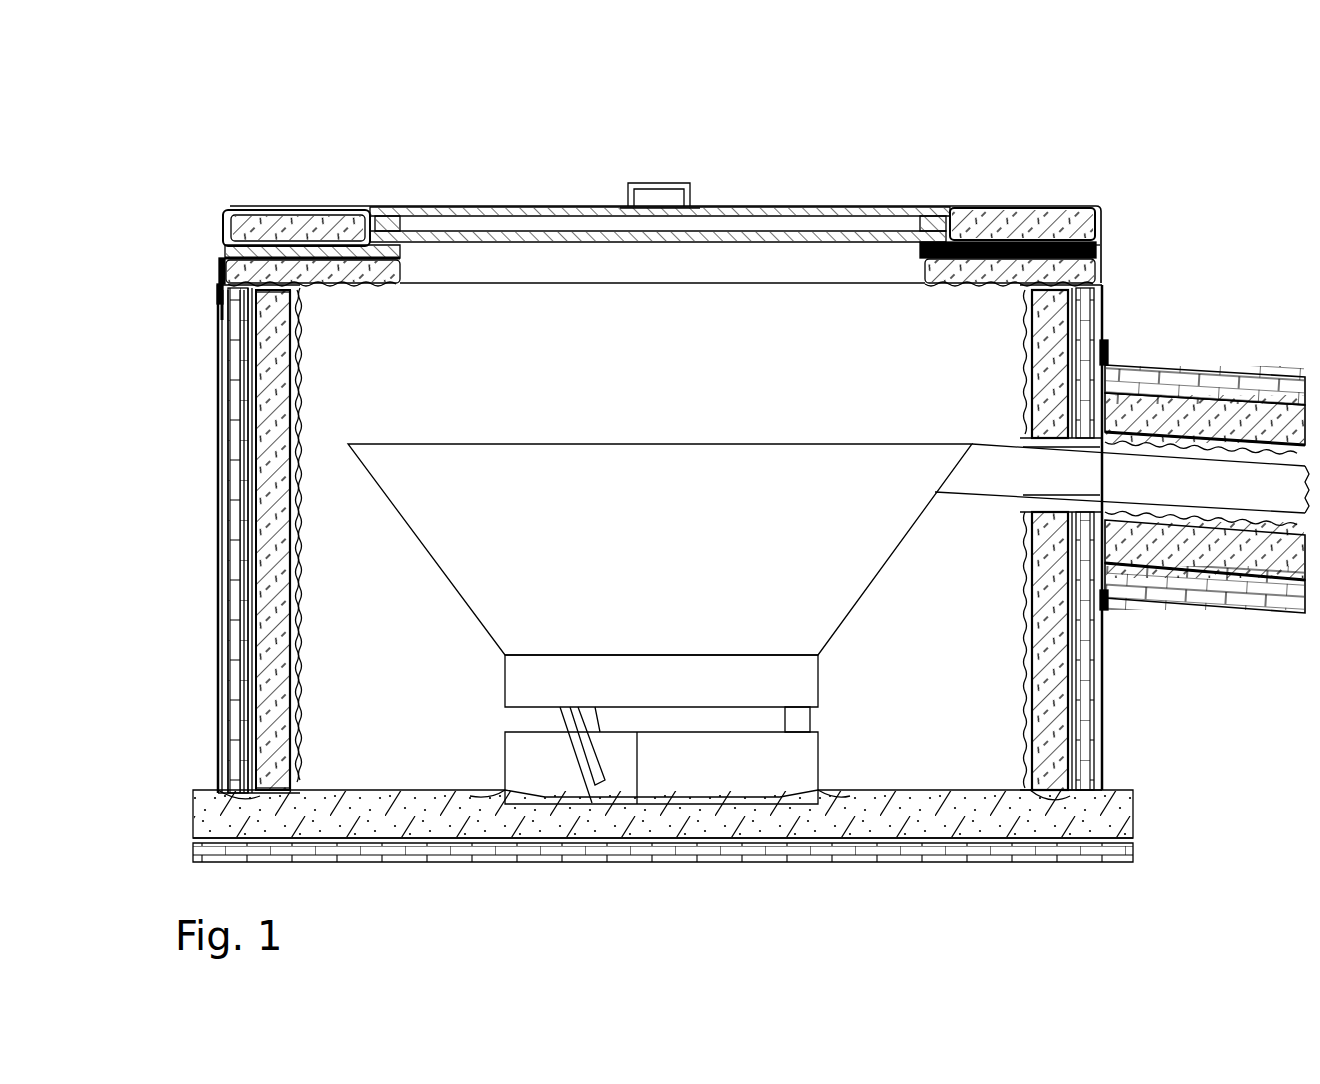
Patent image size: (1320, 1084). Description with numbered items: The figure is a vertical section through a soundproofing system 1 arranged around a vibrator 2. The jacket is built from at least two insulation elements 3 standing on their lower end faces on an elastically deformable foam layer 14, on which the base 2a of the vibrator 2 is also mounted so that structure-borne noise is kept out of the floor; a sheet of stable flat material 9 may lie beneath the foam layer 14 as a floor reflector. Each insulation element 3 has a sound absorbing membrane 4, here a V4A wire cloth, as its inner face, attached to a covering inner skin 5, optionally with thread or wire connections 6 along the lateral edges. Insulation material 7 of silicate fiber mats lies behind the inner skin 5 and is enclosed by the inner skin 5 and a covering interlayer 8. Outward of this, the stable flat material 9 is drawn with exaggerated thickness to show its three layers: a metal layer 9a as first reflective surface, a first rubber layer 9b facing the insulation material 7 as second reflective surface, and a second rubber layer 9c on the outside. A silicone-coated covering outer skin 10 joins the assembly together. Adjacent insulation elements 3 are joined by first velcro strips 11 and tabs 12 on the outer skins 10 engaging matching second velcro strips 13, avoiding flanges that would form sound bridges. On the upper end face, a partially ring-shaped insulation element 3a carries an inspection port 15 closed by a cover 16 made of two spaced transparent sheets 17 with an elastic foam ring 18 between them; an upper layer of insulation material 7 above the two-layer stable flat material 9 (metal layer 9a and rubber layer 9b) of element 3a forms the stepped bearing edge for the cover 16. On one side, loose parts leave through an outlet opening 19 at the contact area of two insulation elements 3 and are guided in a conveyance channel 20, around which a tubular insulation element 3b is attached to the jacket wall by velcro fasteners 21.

The soundproofing system 1 is at (1195, 185).
The vibrator 2 is at (465, 627).
The base 2a is at (820, 765).
The insulation element 3 is at (208, 411).
The ring-shaped insulation element 3a is at (292, 205).
The tubular insulation element 3b is at (1217, 377).
The sound absorbing membrane 4 is at (342, 285).
The covering inner skin 5 is at (297, 338).
The thread or wire connections 6 is at (285, 380).
The insulation material 7 is at (345, 235).
The covering interlayer 8 is at (285, 572).
The stable flat material 9 is at (400, 258).
The metal layer 9a is at (240, 227).
The first rubber layer 9b is at (230, 243).
The second rubber layer 9c is at (230, 633).
The covering outer skin 10 is at (220, 490).
The first velcro strips 11 is at (220, 310).
The tabs 12 is at (220, 265).
The second velcro strips 13 is at (220, 303).
The foam layer 14 is at (430, 785).
The inspection port 15 is at (655, 287).
The cover 16 is at (782, 200).
The transparent sheets 17 is at (533, 202).
The elastic foam ring 18 is at (400, 225).
The outlet opening 19 is at (1020, 500).
The conveyance channel 20 is at (1170, 492).
The velcro fasteners 21 is at (1110, 352).